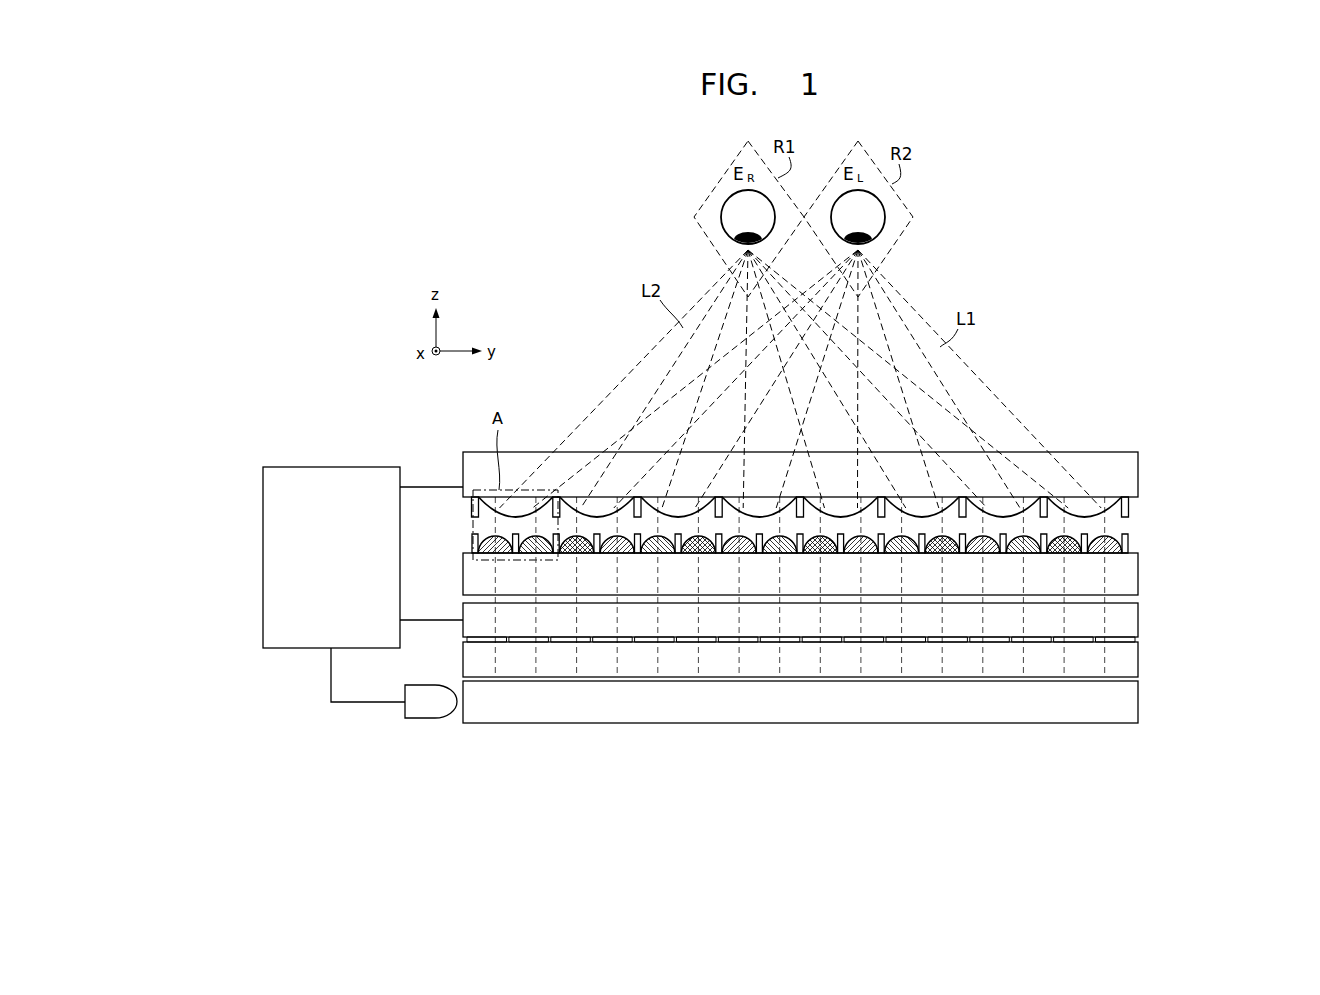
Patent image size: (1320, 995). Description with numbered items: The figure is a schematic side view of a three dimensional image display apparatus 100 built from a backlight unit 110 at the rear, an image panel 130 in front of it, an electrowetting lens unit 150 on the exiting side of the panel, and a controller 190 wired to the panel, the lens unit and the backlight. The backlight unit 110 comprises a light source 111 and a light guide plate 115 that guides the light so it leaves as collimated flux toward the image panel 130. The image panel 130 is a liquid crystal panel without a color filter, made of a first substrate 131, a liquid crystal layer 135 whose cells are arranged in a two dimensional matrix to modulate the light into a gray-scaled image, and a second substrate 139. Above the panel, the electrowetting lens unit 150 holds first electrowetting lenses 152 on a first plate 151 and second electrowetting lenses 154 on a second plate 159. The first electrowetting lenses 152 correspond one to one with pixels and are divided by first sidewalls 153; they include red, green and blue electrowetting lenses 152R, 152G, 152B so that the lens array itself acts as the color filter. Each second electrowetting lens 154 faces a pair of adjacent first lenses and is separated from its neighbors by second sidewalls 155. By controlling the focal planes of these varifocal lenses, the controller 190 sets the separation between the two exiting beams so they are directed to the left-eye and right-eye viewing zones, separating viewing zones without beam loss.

The three dimensional image display apparatus 100 is at (1125, 321).
The backlight unit 110 is at (1214, 700).
The light source 111 is at (423, 720).
The light guide plate 115 is at (1138, 700).
The image panel 130 is at (1214, 645).
The first substrate 131 is at (1138, 657).
The liquid crystal layer 135 is at (1138, 640).
The second substrate 139 is at (1138, 617).
The electrowetting lens unit 150 is at (1214, 522).
The first plate 151 is at (1138, 577).
The first electrowetting lenses 152 is at (836, 458).
The red electrowetting lens 152R is at (992, 550).
The green electrowetting lens 152G is at (1033, 550).
The blue electrowetting lens 152B is at (1077, 552).
The first sidewalls 153 is at (1131, 550).
The second electrowetting lenses 154 is at (1131, 514).
The second sidewalls 155 is at (1137, 500).
The second plate 159 is at (1138, 465).
The controller 190 is at (332, 466).